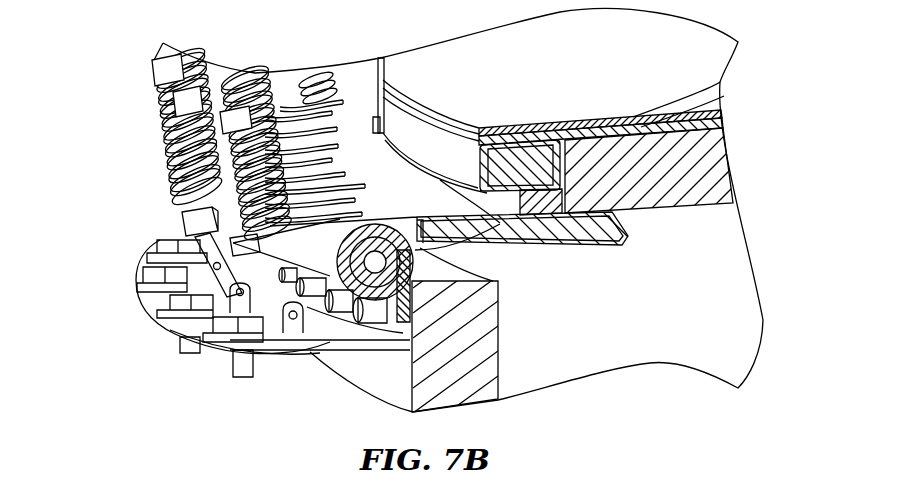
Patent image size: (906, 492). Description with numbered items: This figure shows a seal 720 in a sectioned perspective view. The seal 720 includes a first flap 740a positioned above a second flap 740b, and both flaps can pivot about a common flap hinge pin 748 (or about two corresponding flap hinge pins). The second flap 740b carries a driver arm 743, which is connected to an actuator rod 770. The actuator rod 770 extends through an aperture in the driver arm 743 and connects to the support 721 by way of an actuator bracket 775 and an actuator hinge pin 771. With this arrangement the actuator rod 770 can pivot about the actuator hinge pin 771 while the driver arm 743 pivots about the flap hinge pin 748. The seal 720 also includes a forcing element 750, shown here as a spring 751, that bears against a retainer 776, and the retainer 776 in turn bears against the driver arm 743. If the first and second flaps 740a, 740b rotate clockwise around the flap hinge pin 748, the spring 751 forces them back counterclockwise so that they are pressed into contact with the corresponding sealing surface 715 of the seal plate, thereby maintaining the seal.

The sealing surface 715 is at (670, 195).
The seal 720 is at (160, 149).
The support 721 is at (293, 350).
The first flap 740a is at (547, 220).
The second flap 740b is at (507, 243).
The driver arm 743 is at (302, 248).
The flap hinge pin 748 is at (382, 264).
The forcing element 750 is at (187, 173).
The spring 751 is at (187, 207).
The actuator rod 770 is at (157, 320).
The actuator hinge pin 771 is at (298, 316).
The actuator bracket 775 is at (278, 336).
The retainer 776 is at (266, 240).